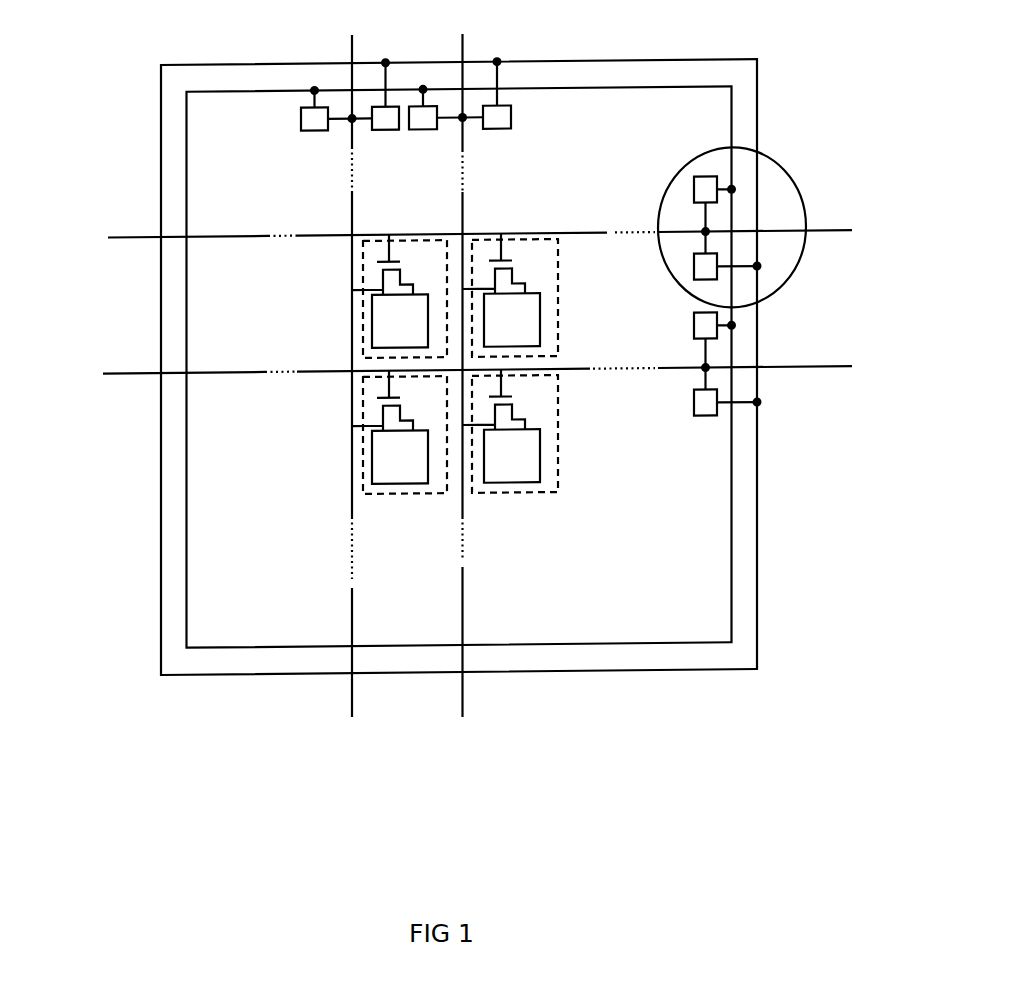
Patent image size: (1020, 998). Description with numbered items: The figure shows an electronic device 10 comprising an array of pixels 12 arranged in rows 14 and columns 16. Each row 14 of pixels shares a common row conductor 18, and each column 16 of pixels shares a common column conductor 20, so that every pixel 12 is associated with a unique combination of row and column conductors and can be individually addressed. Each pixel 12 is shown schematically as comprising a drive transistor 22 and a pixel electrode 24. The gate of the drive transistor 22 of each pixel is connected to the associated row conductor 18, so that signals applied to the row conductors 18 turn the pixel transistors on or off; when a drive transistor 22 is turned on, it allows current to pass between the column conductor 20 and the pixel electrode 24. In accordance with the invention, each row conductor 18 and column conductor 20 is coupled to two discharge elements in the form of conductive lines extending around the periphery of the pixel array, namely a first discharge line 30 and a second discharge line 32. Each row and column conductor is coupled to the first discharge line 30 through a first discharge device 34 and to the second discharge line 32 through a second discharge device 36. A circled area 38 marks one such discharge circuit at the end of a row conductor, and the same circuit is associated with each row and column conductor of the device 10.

The electronic device 10 is at (455, 417).
The pixel 12 is at (556, 314).
The row 14 is at (124, 305).
The column 16 is at (423, 748).
The row conductor 18 is at (128, 237).
The column conductor 20 is at (352, 700).
The drive transistor 22 is at (512, 270).
The pixel electrode 24 is at (530, 432).
The first discharge line 30 is at (633, 92).
The second discharge line 32 is at (715, 65).
The first discharge device 34 is at (317, 132).
The second discharge device 36 is at (393, 132).
The circled area 38 is at (672, 278).